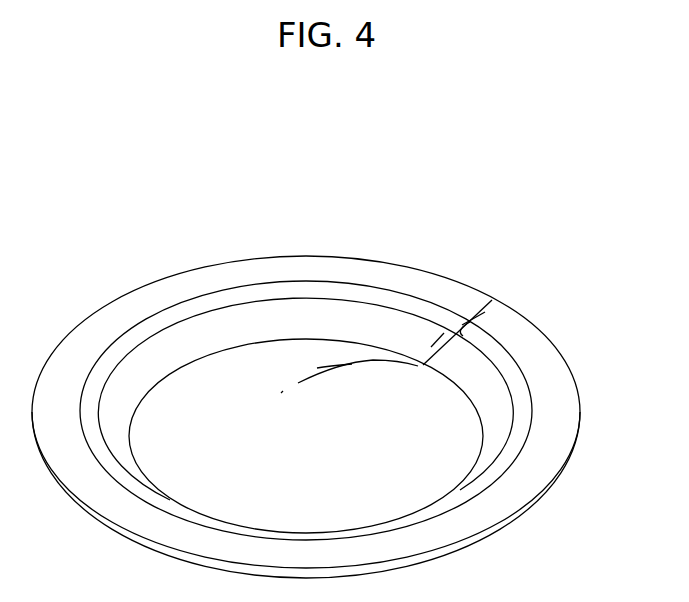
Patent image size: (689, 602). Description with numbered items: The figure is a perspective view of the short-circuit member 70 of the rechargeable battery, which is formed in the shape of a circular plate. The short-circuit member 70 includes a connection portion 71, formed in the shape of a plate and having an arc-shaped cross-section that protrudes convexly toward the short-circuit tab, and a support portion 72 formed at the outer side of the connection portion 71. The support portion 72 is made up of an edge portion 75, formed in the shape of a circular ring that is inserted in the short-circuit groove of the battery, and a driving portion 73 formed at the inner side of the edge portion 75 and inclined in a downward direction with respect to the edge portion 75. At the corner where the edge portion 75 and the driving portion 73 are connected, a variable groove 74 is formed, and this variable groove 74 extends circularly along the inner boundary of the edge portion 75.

The short-circuit member 70 is at (450, 239).
The connection portion 71 is at (388, 436).
The support portion 72 is at (203, 193).
The driving portion 73 is at (188, 343).
The variable groove 74 is at (490, 350).
The edge portion 75 is at (220, 281).